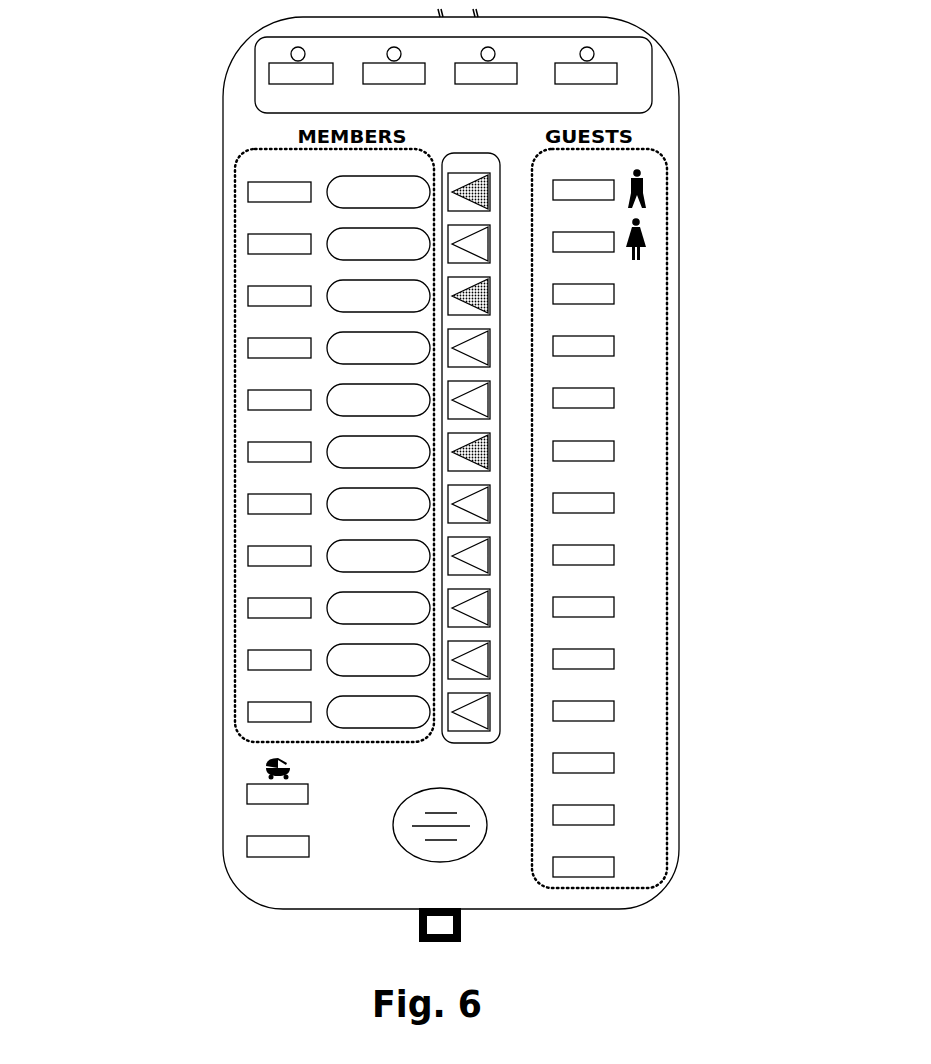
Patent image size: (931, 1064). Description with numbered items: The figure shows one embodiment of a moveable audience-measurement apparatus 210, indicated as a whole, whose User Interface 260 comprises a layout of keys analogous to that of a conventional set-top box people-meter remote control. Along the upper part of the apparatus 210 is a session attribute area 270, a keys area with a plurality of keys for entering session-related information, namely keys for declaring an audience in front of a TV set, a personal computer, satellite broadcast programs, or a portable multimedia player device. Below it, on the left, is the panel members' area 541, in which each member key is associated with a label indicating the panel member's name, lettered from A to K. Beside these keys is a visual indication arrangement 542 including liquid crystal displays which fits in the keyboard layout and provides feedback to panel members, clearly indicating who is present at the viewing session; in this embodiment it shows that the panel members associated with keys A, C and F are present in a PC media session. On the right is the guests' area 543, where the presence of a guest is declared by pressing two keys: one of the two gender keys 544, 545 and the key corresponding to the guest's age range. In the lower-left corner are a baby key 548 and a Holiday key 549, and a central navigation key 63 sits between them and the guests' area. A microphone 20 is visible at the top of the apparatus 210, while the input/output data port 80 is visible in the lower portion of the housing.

The microphone 20 is at (440, 10).
The session attribute area 270 is at (255, 77).
The user interface 260 is at (245, 437).
The panel members' area 541 is at (237, 245).
The apparatus 210 is at (194, 501).
The visual indication arrangement 542 is at (467, 746).
The guests' area 543 is at (671, 512).
The gender key 544 is at (663, 187).
The gender key 545 is at (653, 245).
The baby button 548 is at (247, 787).
The holiday button 549 is at (247, 844).
The navigation button 63 is at (487, 828).
The input/output data port 80 is at (413, 921).